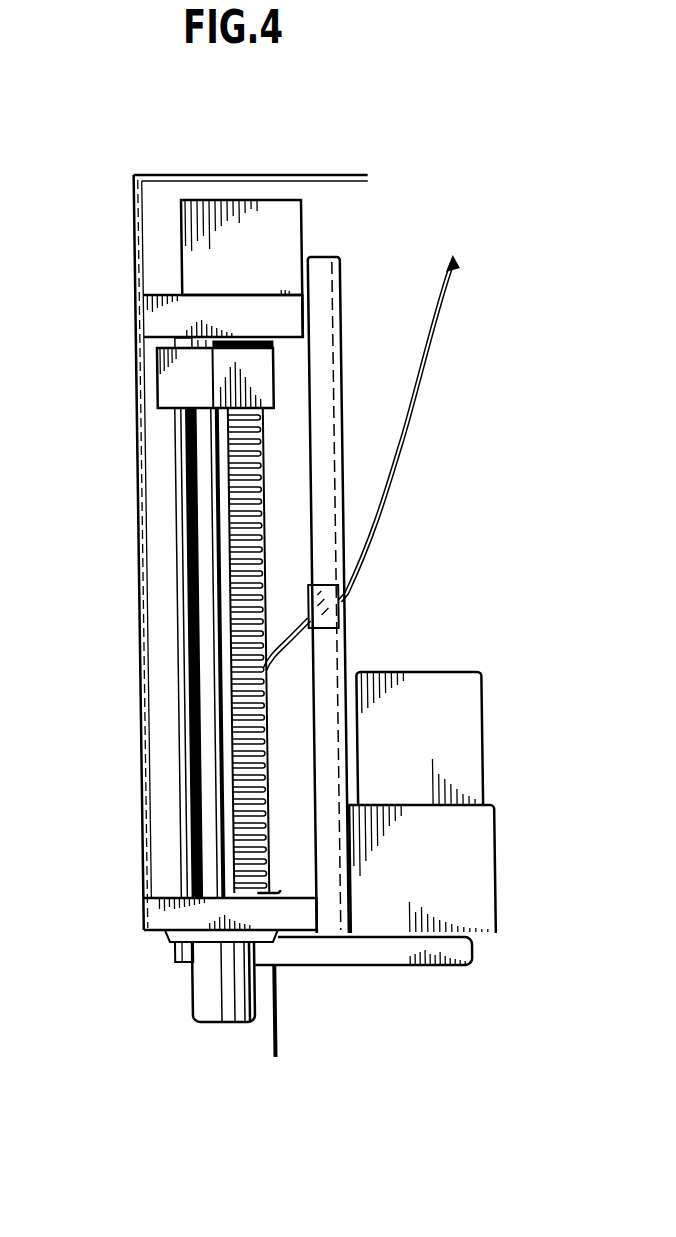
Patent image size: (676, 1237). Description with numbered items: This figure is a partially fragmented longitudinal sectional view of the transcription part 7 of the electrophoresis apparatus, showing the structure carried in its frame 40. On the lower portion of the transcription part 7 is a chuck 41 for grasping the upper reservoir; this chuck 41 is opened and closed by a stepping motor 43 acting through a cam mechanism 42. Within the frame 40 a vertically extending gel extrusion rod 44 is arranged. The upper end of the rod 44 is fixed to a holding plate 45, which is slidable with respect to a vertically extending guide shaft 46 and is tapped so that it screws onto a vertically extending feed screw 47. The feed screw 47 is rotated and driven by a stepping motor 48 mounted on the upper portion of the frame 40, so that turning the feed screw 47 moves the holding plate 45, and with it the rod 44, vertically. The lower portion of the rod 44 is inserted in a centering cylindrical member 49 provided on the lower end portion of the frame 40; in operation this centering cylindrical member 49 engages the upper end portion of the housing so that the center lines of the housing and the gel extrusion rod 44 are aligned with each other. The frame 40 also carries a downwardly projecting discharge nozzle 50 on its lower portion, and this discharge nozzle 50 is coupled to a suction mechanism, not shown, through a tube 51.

The transcription part 7 is at (109, 350).
The frame 40 is at (325, 552).
The chuck 41 is at (165, 953).
The cam mechanism 42 is at (441, 875).
The stepping motor 43 is at (450, 738).
The gel extrusion rod 44 is at (209, 802).
The holding plate 45 is at (174, 382).
The guide shaft 46 is at (176, 477).
The feed screw 47 is at (258, 542).
The stepping motor 48 is at (284, 240).
The centering cylindrical member 49 is at (190, 985).
The discharge nozzle 50 is at (266, 1040).
The tube 51 is at (413, 397).